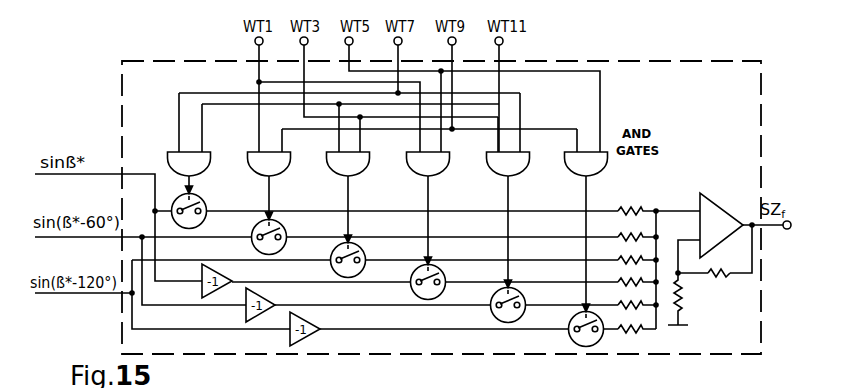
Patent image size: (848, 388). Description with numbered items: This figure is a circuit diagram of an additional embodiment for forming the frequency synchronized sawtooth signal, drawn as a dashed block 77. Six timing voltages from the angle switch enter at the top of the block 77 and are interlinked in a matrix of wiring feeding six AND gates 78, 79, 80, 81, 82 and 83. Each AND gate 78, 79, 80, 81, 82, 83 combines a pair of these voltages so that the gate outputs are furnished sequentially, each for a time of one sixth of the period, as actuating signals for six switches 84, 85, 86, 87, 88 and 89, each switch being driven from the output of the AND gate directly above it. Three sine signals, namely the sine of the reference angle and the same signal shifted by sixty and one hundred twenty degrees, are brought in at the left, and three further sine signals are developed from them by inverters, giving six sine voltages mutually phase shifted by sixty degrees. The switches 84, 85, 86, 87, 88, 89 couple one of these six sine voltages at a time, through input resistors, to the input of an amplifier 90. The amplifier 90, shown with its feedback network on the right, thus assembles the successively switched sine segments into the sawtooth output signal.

The circuit block 77 is at (620, 61).
The AND gate 78 is at (205, 167).
The AND gate 79 is at (283, 167).
The AND gate 80 is at (360, 167).
The AND gate 81 is at (444, 167).
The AND gate 82 is at (524, 167).
The AND gate 83 is at (603, 169).
The switch 84 is at (205, 203).
The switch 85 is at (283, 222).
The switch 86 is at (358, 246).
The switch 87 is at (438, 268).
The switch 88 is at (518, 290).
The switch 89 is at (572, 341).
The amplifier 90 is at (728, 192).